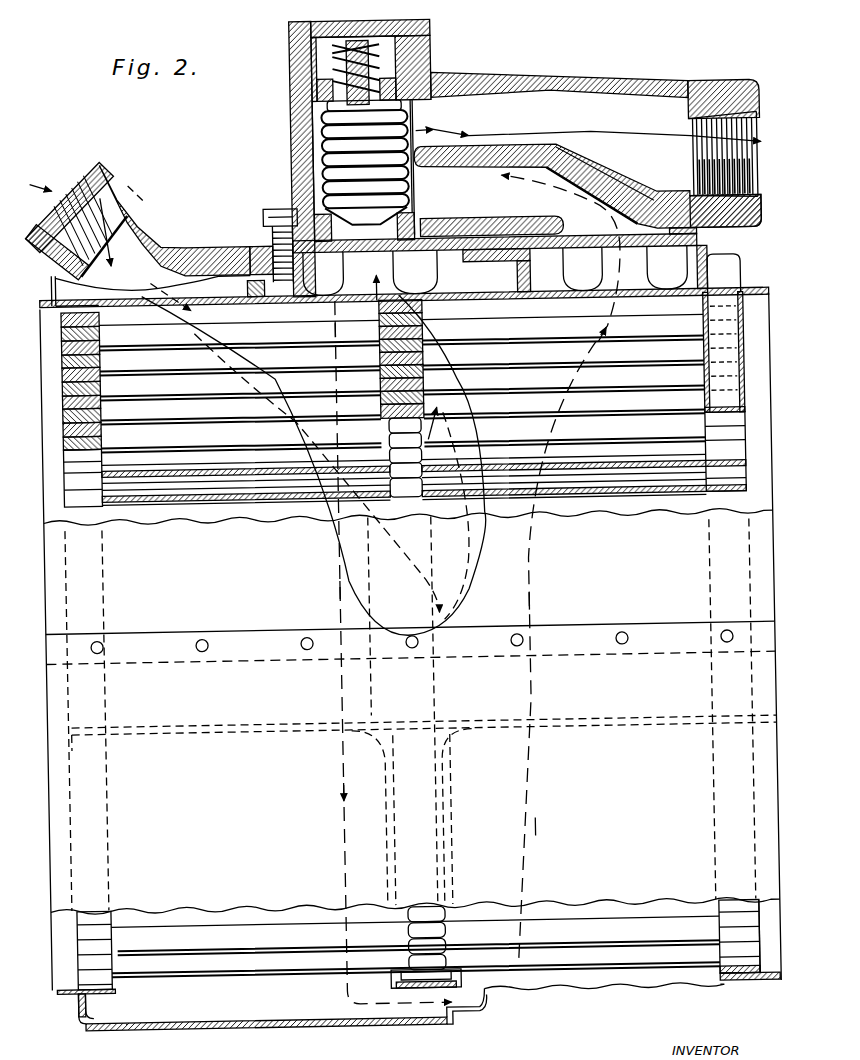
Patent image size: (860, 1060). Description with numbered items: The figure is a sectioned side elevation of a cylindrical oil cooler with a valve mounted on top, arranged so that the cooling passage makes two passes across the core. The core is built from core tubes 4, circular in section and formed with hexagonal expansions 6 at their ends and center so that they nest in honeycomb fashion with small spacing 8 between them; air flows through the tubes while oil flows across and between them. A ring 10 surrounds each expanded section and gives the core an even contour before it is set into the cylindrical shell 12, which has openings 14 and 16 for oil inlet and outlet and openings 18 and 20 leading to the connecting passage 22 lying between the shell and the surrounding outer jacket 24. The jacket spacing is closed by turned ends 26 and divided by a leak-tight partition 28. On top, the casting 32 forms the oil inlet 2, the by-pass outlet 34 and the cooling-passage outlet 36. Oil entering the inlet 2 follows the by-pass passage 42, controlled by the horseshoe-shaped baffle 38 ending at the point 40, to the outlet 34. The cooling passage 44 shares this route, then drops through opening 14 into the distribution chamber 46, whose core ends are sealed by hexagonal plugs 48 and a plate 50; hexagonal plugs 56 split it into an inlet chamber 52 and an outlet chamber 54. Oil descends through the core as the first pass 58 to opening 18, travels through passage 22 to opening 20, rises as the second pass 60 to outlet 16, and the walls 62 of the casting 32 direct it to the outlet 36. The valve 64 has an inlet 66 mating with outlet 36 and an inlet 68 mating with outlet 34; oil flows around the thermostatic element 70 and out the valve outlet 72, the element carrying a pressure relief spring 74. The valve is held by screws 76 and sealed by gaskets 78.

The oil inlet 2 is at (76, 172).
The core tubes 4 is at (138, 505).
The hexagonal expansions 6 is at (67, 372).
The spacing between core tubes 8 is at (640, 370).
The ring 10 is at (62, 311).
The cylindrical shell 12 is at (180, 293).
The inlet opening 14 is at (272, 306).
The outlet opening 16 is at (552, 306).
The first-pass opening 18 is at (156, 935).
The second-pass opening 20 is at (604, 902).
The connecting passage 22 is at (332, 1015).
The outer jacket 24 is at (120, 1016).
The turned ends 26 is at (72, 1000).
The leak-tight partition 28 is at (205, 725).
The casting 32 is at (240, 246).
The by-pass outlet 34 is at (410, 258).
The cooling-passage outlet 36 is at (572, 258).
The baffle 38 is at (228, 293).
The baffle end 40 is at (436, 588).
The by-pass passage 42 is at (226, 392).
The cooling passage 44 is at (254, 412).
The distribution chamber 46 is at (318, 290).
The hexagonal plugs 48 is at (67, 342).
The plate 50 is at (752, 296).
The inlet chamber 52 is at (108, 300).
The outlet chamber 54 is at (735, 374).
The hexagonal plugs 56 is at (428, 328).
The first pass 58 is at (336, 777).
The second pass 60 is at (536, 793).
The walls of outlet casting 62 is at (537, 275).
The valve 64 is at (548, 80).
The valve inlet 66 is at (633, 222).
The valve inlet 68 is at (427, 214).
The thermostatic element 70 is at (418, 126).
The valve outlet 72 is at (757, 122).
The pressure relief spring 74 is at (420, 22).
The screws 76 is at (290, 206).
The gaskets 78 is at (452, 236).